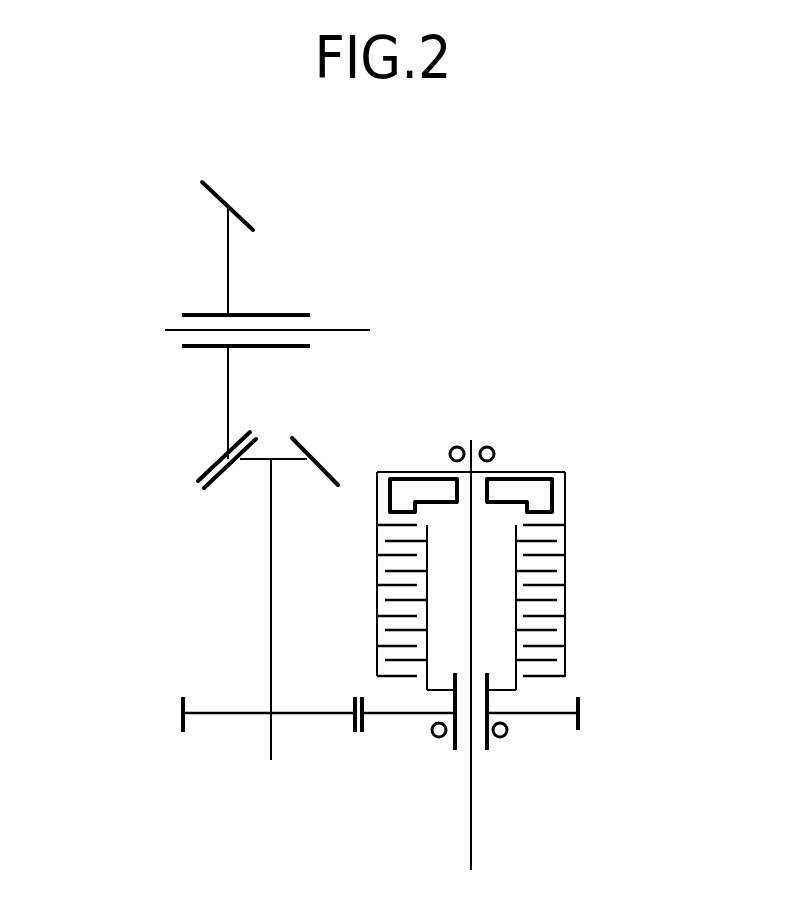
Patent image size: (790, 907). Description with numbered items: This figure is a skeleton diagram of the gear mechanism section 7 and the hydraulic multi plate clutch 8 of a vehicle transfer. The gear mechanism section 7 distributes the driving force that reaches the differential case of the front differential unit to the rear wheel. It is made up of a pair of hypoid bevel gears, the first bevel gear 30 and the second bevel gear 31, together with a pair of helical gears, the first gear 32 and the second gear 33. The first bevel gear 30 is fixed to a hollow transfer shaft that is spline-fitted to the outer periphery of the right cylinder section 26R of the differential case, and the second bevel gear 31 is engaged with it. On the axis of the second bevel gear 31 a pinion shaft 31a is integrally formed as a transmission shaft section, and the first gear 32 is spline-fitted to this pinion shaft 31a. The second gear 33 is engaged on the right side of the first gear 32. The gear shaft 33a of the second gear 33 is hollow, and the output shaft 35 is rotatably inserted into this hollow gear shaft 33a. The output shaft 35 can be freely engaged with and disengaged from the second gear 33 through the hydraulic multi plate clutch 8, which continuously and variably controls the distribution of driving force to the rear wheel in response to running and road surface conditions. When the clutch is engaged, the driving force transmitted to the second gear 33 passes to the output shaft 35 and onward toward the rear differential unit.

The gear mechanism section 7 is at (315, 480).
The hydraulic multi plate clutch 8 is at (528, 655).
The right cylinder section 26R is at (196, 312).
The first bevel gear 30 is at (228, 265).
The second bevel gear 31 is at (294, 438).
The pinion shaft 31a is at (271, 571).
The first gear 32 is at (220, 714).
The second gear 33 is at (400, 714).
The gear shaft 33a is at (489, 703).
The output shaft 35 is at (471, 815).